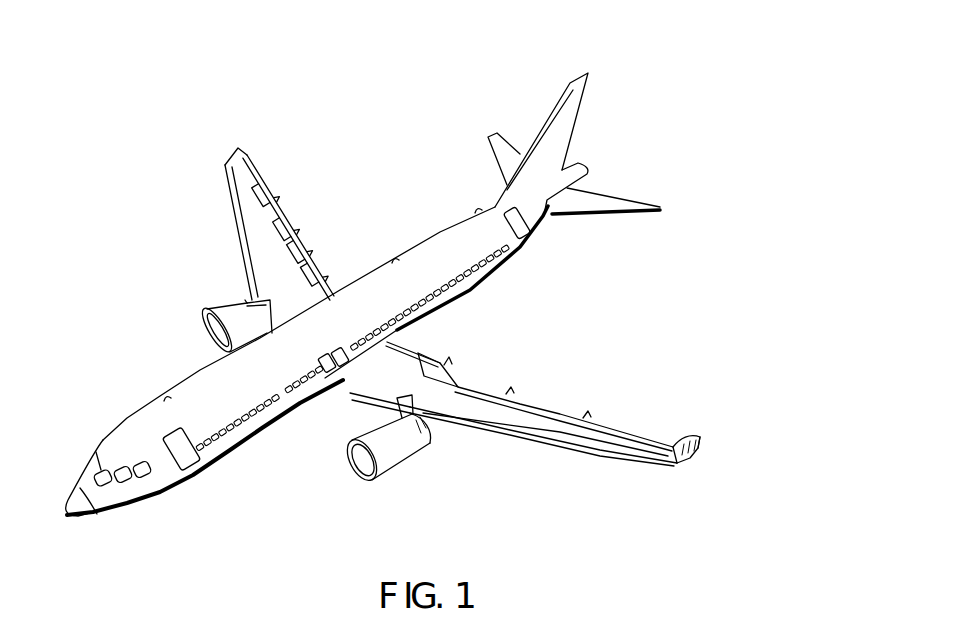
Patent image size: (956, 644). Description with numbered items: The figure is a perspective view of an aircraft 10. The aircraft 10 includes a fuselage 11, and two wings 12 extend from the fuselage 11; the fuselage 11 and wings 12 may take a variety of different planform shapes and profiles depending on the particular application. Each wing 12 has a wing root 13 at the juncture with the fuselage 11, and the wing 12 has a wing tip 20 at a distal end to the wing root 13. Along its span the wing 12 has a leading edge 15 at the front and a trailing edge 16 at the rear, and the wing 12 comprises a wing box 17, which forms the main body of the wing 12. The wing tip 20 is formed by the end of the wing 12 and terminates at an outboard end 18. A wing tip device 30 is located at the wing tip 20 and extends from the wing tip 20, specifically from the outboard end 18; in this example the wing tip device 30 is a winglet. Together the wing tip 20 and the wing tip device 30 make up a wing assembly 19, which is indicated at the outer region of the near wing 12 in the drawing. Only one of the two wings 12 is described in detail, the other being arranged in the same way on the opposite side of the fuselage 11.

The aircraft 10 is at (727, 69).
The fuselage 11 is at (430, 244).
The wing 12 is at (516, 406).
The wing root 13 is at (343, 370).
The leading edge 15 is at (620, 451).
The trailing edge 16 is at (610, 420).
The wing box 17 is at (574, 440).
The outboard end 18 is at (677, 461).
The wing assembly 19 is at (729, 357).
The wing tip 20 is at (676, 447).
The wing tip device 30 is at (700, 440).